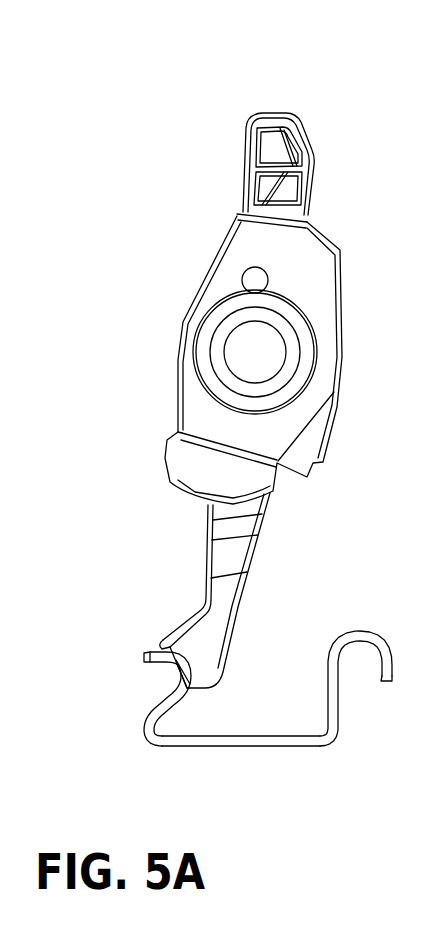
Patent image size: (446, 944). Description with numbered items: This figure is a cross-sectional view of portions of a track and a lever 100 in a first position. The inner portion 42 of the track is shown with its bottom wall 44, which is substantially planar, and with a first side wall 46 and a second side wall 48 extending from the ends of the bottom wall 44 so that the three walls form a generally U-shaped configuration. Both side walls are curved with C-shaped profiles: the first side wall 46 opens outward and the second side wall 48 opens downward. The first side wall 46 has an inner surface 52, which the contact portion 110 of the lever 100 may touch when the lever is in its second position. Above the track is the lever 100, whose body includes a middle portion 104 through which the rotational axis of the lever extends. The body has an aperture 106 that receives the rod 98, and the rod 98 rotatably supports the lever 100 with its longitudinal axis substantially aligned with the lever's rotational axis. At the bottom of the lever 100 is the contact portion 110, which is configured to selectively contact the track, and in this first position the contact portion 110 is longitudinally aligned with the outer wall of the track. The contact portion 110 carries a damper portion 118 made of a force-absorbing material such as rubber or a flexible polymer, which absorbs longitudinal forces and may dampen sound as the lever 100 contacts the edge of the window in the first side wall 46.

The lever 100 is at (196, 120).
The middle portion 104 is at (275, 360).
The rod 98 is at (261, 350).
The aperture 106 is at (294, 357).
The contact portion 110 is at (214, 648).
The damper portion 118 is at (164, 646).
The inner surface 52 is at (190, 692).
The inner portion 42 is at (221, 718).
The first side wall 46 is at (152, 712).
The bottom wall 44 is at (253, 741).
The second side wall 48 is at (334, 695).